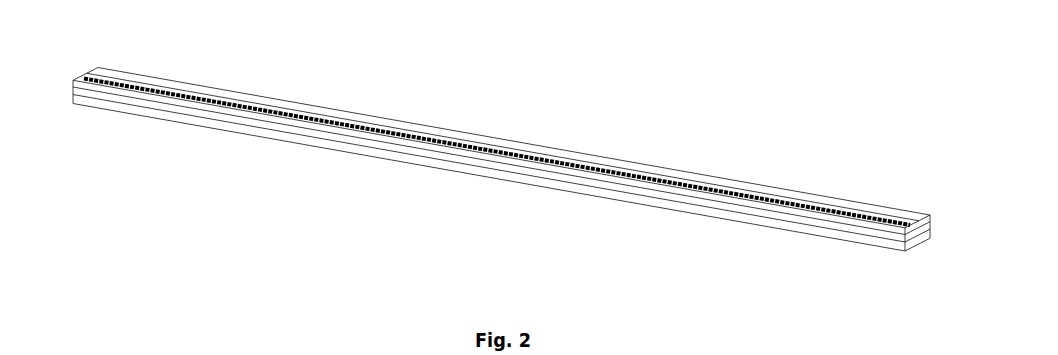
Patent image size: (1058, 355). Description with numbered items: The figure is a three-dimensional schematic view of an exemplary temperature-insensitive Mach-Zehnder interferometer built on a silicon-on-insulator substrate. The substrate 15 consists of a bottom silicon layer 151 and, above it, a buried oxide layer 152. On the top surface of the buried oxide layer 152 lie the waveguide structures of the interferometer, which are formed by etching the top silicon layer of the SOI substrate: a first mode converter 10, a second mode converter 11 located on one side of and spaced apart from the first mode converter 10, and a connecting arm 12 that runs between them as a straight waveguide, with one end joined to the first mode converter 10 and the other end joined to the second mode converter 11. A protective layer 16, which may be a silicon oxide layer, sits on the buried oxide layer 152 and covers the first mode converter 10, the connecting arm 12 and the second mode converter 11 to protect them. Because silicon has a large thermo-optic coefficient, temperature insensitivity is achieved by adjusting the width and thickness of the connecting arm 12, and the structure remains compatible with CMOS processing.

The first mode converter 10 is at (501, 134).
The second mode converter 11 is at (727, 191).
The connecting arm 12 is at (415, 138).
The substrate 15 is at (501, 169).
The bottom silicon layer 151 is at (195, 203).
The buried oxide layer 152 is at (186, 115).
The protective layer 16 is at (120, 73).